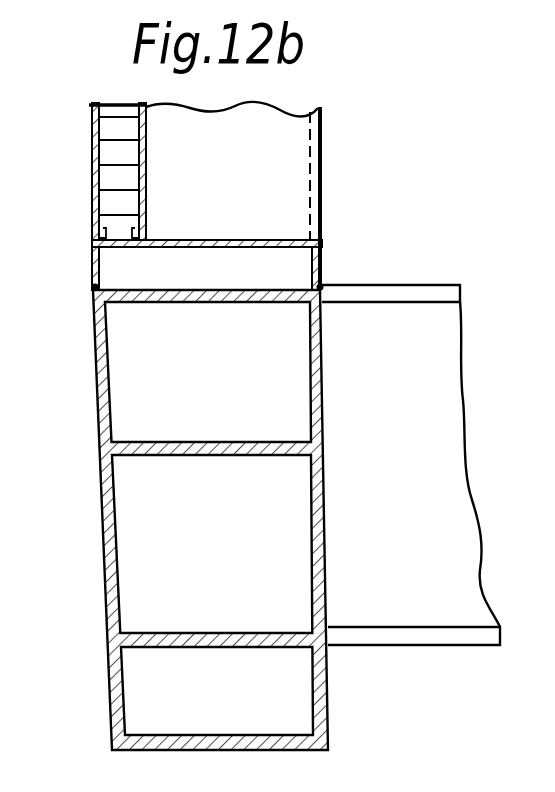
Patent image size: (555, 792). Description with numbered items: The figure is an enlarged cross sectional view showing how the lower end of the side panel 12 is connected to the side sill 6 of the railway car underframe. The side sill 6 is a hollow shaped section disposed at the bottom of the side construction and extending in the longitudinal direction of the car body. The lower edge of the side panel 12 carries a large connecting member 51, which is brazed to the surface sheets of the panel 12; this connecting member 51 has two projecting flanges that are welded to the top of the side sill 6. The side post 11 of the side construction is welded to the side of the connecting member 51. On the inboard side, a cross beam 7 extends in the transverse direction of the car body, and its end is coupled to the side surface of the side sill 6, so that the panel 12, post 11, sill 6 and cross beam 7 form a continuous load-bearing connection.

The side sill 6 is at (100, 445).
The cross beam 7 is at (460, 447).
The side post 11 is at (283, 160).
The side panel 12 is at (102, 151).
The connecting member 51 is at (210, 240).